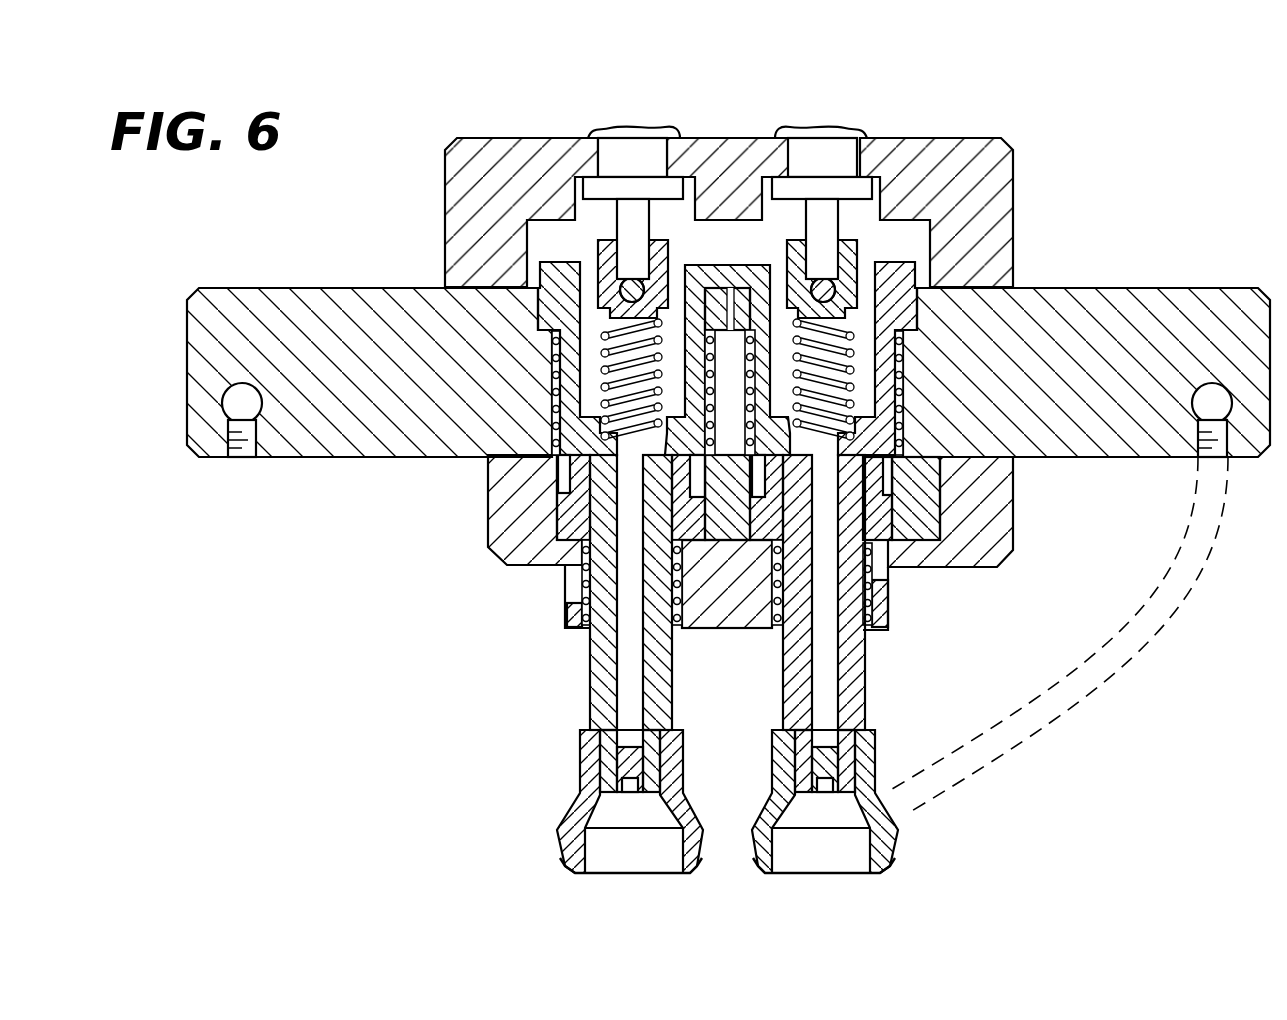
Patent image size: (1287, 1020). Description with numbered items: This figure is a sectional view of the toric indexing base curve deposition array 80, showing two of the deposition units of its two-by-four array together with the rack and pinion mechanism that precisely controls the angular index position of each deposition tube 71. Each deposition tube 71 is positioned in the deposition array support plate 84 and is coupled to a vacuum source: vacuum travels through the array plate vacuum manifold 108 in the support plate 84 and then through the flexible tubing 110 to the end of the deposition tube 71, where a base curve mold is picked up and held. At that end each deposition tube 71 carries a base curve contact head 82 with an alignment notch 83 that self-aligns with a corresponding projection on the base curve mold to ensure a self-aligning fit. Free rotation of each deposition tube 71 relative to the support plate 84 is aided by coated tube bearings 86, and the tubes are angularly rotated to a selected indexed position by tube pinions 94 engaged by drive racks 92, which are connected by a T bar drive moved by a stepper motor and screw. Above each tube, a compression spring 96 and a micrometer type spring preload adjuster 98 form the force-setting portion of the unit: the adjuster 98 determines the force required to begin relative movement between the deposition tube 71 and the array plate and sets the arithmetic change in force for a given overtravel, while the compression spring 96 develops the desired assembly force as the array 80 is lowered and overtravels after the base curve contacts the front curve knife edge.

The toric indexing base curve deposition array 80 is at (872, 92).
The support plate 84 is at (1120, 287).
The array plate vacuum manifold 108 is at (1212, 383).
The drive rack 92 is at (895, 478).
The tube pinion 94 is at (560, 505).
The bearing 86 is at (552, 395).
The compression spring 96 is at (608, 348).
The micrometer type spring preload adjuster 98 is at (600, 130).
The deposition tube 71 is at (672, 668).
The base curve contact head 82 is at (752, 797).
The alignment notch 83 is at (572, 873).
The flexible tubing 110 is at (1025, 740).